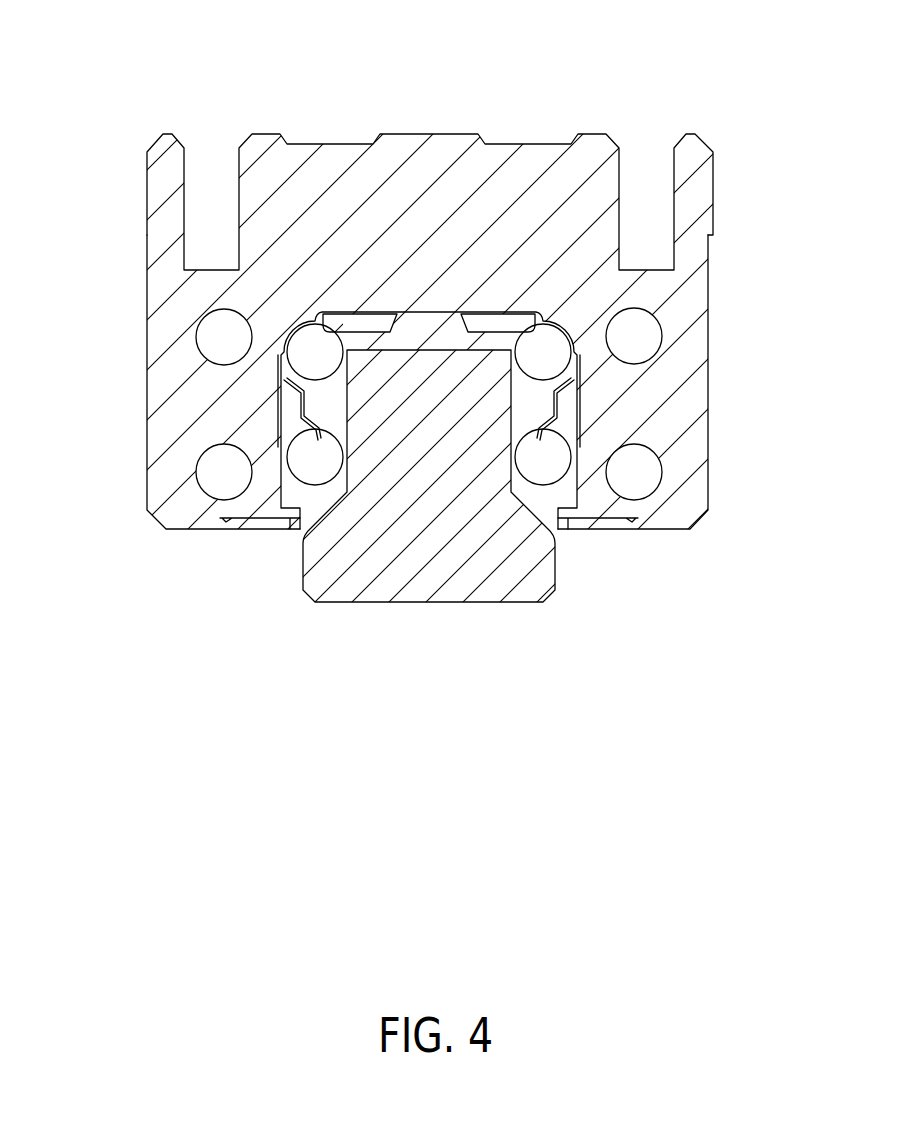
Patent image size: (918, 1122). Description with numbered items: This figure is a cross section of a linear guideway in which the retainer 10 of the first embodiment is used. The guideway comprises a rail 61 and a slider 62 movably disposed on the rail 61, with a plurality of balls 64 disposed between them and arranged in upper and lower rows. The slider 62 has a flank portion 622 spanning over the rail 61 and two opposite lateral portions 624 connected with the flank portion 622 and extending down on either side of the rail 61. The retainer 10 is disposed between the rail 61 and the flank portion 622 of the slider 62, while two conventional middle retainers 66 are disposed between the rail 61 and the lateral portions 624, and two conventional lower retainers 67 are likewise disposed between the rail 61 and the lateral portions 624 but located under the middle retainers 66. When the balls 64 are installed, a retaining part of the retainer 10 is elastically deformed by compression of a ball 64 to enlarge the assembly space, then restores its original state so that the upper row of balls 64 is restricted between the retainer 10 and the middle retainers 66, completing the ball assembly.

The retainer 10 is at (453, 310).
The rail 61 is at (481, 578).
The slider 62 is at (706, 118).
The flank portion 622 is at (422, 163).
The lateral portions 624 is at (162, 483).
The balls 64 is at (312, 345).
The middle retainers 66 is at (285, 398).
The lower retainers 67 is at (258, 530).